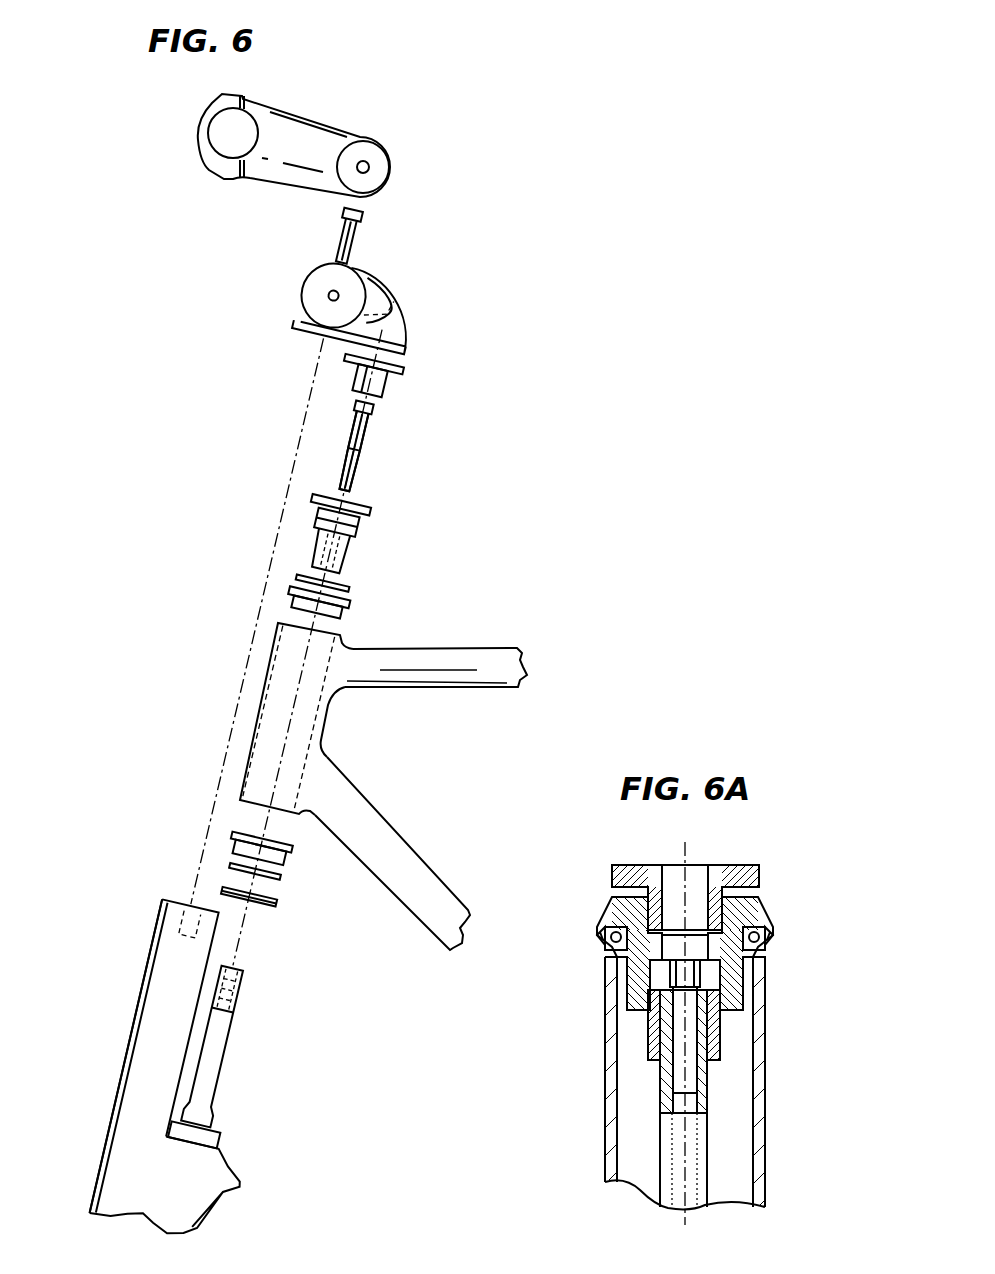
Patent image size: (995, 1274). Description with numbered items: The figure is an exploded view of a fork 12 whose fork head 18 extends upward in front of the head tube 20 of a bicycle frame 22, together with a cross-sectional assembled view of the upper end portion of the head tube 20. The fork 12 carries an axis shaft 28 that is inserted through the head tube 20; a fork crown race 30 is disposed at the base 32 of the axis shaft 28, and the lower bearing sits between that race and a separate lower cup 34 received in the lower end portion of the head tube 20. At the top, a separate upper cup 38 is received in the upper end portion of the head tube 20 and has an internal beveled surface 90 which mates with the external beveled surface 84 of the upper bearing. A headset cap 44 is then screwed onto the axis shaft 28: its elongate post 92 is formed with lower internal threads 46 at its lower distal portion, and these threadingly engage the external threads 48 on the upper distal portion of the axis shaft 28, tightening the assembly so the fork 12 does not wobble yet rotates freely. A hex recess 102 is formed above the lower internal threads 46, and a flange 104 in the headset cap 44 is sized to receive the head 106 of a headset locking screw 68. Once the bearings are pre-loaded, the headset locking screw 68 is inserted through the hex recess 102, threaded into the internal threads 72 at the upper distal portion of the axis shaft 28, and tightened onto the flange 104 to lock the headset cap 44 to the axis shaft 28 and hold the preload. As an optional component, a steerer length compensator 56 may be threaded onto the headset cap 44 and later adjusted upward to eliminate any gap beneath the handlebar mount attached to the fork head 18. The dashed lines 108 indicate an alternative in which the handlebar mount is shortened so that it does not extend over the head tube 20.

In FIG. 6, the fork 12 is at (91, 1058).
In FIG. 6, the fork head 18 is at (165, 995).
In FIG. 6, the head tube 20 is at (210, 612).
In FIG. 6A, the head tube 20 is at (763, 1095).
In FIG. 6, the bicycle frame 22 is at (482, 660).
In FIG. 6, the axis shaft 28 is at (212, 1068).
In FIG. 6A, the axis shaft 28 is at (707, 1167).
In FIG. 6, the fork crown race 30 is at (275, 905).
In FIG. 6, the base 32 is at (250, 1118).
In FIG. 6, the lower cup 34 is at (285, 860).
In FIG. 6, the upper cup 38 is at (341, 609).
In FIG. 6A, the upper cup 38 is at (605, 937).
In FIG. 6, the headset cap 44 is at (352, 528).
In FIG. 6A, the headset cap 44 is at (610, 915).
In FIG. 6A, the lower internal threads 46 is at (667, 967).
In FIG. 6A, the external threads 48 is at (660, 1088).
In FIG. 6, the steerer length compensator 56 is at (400, 378).
In FIG. 6A, the steerer length compensator 56 is at (594, 878).
In FIG. 6, the headset locking screw 68 is at (382, 450).
In FIG. 6, the internal threads 72 is at (243, 990).
In FIG. 6A, the internal threads 72 is at (675, 1147).
In FIG. 6A, the external beveled surface 84 is at (685, 945).
In FIG. 6A, the internal beveled surface 90 is at (605, 950).
In FIG. 6A, the elongate post 92 is at (653, 1045).
In FIG. 6A, the hex recess 102 is at (712, 961).
In FIG. 6A, the flange 104 is at (745, 1012).
In FIG. 6, the head 106 is at (372, 410).
In FIG. 6A, the head 106 is at (673, 947).
In FIG. 6, the dashed lines 108 is at (385, 312).